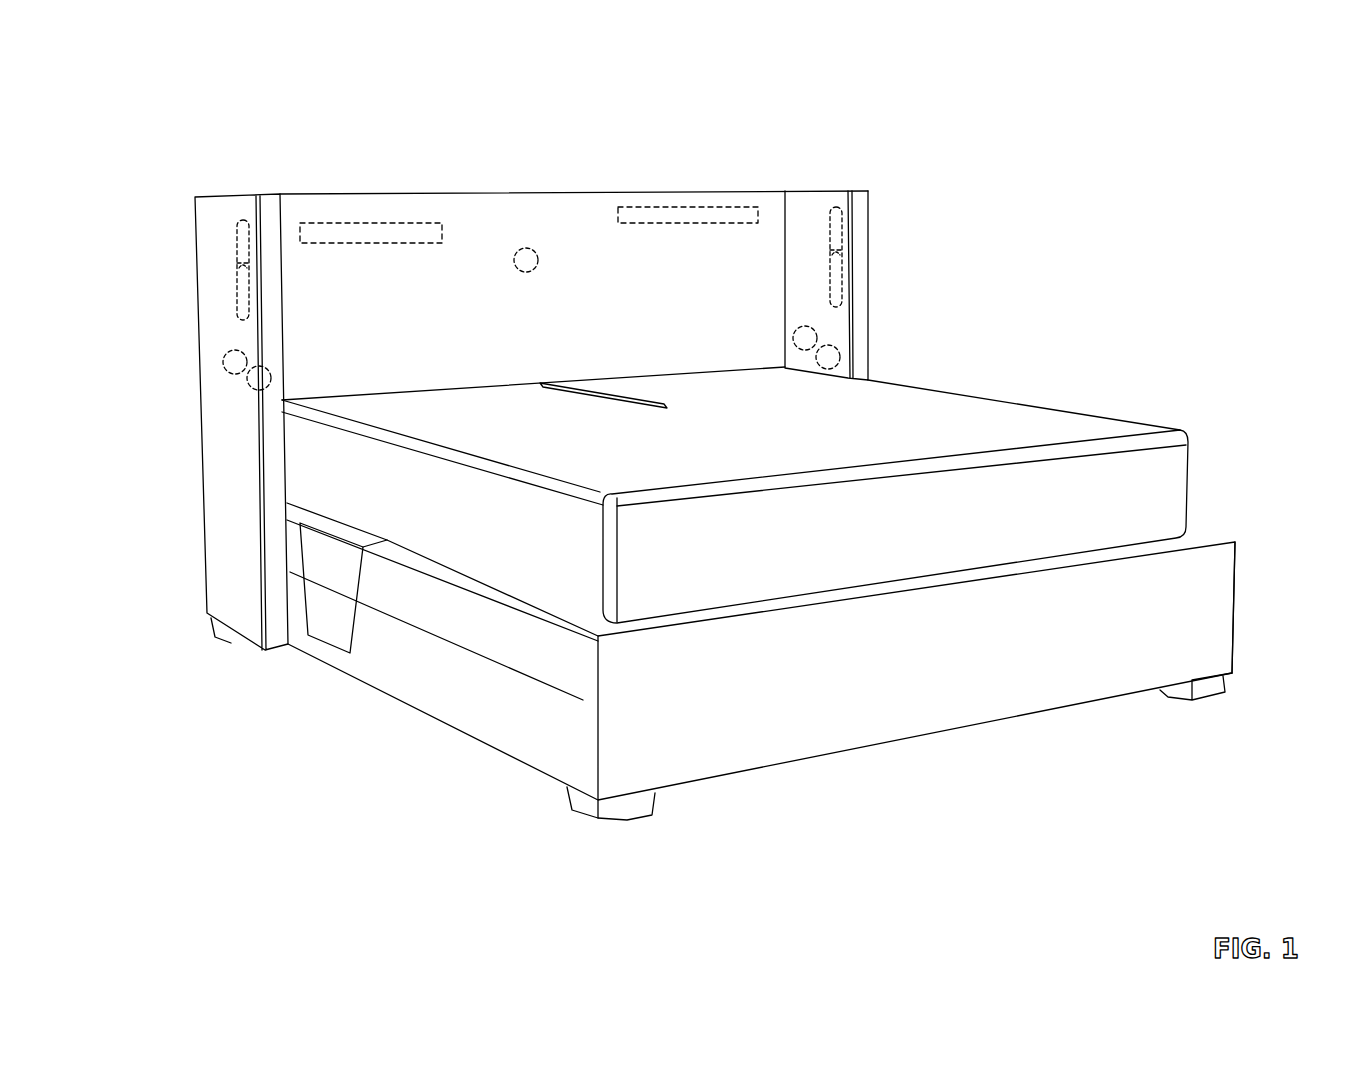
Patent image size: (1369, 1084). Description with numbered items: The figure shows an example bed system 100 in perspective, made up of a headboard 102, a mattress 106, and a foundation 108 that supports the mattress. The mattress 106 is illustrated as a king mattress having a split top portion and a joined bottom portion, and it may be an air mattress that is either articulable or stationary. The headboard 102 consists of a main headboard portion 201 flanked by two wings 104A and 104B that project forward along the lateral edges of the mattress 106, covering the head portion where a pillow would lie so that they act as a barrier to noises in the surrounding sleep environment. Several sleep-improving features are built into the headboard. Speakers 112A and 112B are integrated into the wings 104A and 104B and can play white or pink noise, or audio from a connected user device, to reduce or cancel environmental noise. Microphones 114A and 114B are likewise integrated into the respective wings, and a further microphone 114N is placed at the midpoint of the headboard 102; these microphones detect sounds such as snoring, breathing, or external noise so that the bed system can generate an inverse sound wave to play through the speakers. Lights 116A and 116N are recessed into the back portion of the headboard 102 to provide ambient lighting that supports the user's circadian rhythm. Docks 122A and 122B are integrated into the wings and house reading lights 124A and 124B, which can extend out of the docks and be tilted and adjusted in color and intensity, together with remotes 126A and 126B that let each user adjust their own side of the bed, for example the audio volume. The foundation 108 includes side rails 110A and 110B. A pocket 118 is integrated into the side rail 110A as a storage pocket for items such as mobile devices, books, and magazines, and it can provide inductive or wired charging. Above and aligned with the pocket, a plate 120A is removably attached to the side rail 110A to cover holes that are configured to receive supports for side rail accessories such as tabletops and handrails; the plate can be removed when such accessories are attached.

The bed system 100 is at (207, 82).
The headboard 102 is at (525, 190).
The wing 104A is at (215, 285).
The wing 104B is at (872, 278).
The mattress 106 is at (825, 447).
The foundation 108 is at (1093, 708).
The side rail 110A is at (430, 685).
The side rail 110B is at (1195, 523).
The speaker 112A is at (222, 358).
The speaker 112B is at (820, 333).
The microphone 114A is at (247, 387).
The microphone 114B is at (847, 352).
The microphone 114N is at (532, 247).
The light 116A is at (413, 222).
The light 116N is at (708, 207).
The pocket 118 is at (333, 635).
The plate 120A is at (320, 553).
The dock 122A is at (235, 253).
The dock 122B is at (850, 250).
The reading light 124A is at (240, 216).
The reading light 124B is at (837, 207).
The remote 126A is at (240, 282).
The remote 126B is at (842, 278).
The main headboard portion 201 is at (597, 235).